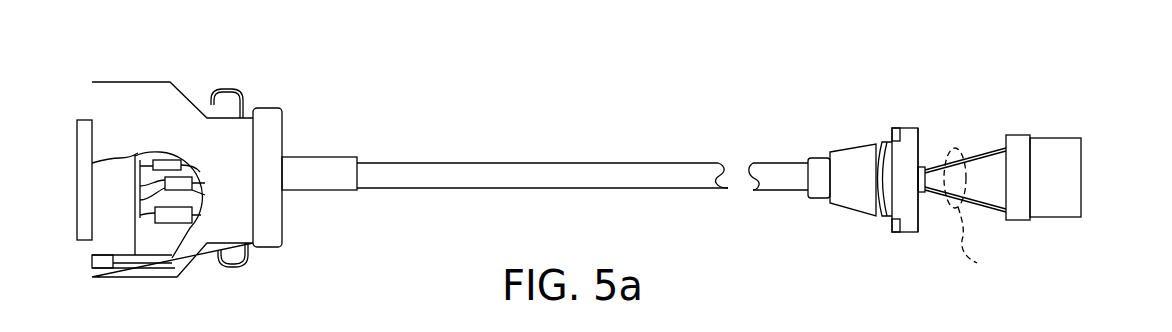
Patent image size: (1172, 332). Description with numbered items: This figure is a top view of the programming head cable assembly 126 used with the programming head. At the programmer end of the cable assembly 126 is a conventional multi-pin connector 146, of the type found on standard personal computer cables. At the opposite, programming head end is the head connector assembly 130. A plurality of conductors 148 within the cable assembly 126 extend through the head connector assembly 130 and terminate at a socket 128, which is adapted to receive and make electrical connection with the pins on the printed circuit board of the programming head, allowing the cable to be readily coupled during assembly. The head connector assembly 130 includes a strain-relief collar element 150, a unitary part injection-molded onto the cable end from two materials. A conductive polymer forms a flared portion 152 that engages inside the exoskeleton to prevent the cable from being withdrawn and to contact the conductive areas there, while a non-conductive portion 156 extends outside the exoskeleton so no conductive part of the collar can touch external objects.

The multi-pin connector 146 is at (160, 93).
The programming head cable assembly 126 is at (531, 103).
The non-conductive portion 156 is at (848, 193).
The strain-relief collar element 150 is at (894, 131).
The flared portion 152 is at (907, 218).
The head connector assembly 130 is at (966, 117).
The socket 128 is at (1053, 155).
The conductors 148 is at (980, 214).